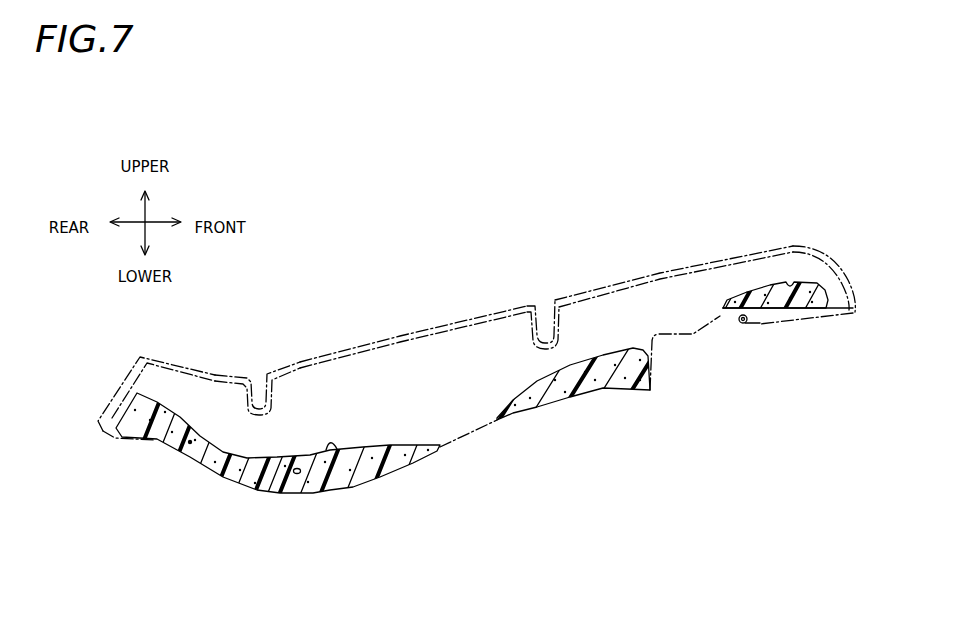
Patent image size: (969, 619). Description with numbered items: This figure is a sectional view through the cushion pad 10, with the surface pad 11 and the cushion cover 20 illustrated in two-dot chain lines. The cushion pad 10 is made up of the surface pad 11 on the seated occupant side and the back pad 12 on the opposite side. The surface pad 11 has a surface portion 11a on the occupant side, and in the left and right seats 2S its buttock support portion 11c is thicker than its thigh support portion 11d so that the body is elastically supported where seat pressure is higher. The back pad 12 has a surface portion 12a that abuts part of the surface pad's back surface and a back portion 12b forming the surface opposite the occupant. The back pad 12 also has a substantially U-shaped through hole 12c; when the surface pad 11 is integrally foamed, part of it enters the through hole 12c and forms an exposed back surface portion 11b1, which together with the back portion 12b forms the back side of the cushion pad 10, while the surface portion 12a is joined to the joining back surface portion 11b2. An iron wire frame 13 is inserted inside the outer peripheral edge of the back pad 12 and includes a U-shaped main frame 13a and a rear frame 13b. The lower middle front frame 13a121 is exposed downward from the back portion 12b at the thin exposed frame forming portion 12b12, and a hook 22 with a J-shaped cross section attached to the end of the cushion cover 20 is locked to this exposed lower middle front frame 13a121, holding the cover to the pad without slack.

The cushion pad 10 is at (464, 233).
The surface pad 11 is at (578, 314).
The surface portion 11a is at (407, 350).
The exposed back surface portion 11b1 is at (488, 447).
The joining back surface portion 11b2 is at (192, 440).
The buttock support portion 11c is at (357, 393).
The thigh support portion 11d is at (617, 313).
The back pad 12 is at (570, 398).
The surface portion 12a is at (331, 447).
The back portion 12b is at (226, 480).
The exposed frame forming portion 12b12 is at (743, 293).
The through hole 12c is at (441, 449).
The frame 13 is at (330, 562).
The main frame 13a is at (855, 159).
The lower middle front frame 13a121 is at (760, 287).
The rear frame 13b is at (297, 475).
The left and right seats 2S is at (297, 357).
The cushion cover 20 is at (660, 270).
The hook 22 is at (746, 325).